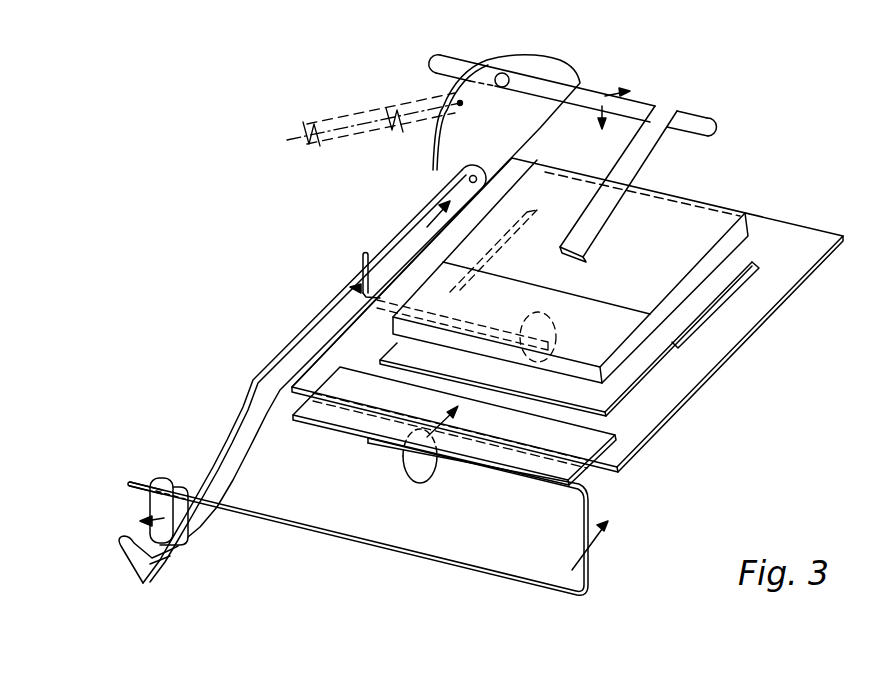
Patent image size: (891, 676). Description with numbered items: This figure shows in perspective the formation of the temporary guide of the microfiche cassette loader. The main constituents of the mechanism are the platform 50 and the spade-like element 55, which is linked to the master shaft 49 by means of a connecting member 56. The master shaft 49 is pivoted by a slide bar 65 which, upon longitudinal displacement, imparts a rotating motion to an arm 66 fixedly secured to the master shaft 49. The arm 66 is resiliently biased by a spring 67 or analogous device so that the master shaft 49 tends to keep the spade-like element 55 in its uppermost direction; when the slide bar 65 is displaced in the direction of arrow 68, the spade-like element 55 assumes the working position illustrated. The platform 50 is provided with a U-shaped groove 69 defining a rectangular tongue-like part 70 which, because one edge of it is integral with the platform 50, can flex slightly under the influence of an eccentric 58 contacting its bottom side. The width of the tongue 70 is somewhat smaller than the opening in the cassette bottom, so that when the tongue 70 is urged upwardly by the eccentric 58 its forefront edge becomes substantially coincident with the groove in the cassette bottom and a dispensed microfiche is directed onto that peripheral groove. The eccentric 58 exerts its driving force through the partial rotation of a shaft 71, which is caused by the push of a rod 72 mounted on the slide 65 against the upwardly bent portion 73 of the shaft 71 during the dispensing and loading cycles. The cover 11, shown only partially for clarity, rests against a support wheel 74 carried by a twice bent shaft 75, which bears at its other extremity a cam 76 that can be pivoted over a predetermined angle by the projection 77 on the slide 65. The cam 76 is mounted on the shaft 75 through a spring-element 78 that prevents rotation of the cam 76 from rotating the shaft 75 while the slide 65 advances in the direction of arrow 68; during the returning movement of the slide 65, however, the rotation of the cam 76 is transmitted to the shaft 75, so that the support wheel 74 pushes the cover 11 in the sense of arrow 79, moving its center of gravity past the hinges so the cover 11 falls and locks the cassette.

The cover 11 is at (565, 463).
The master shaft 49 is at (655, 112).
The platform 50 is at (722, 343).
The spade-like element 55 is at (728, 217).
The connecting member 56 is at (688, 157).
The eccentric 58 is at (603, 392).
The slide bar 65 is at (287, 353).
The arm 66 is at (578, 75).
The spring 67 is at (335, 142).
The arrow 68 is at (427, 210).
The U-shaped groove 69 is at (743, 283).
The rectangular tongue-like part 70 is at (603, 420).
The shaft 71 is at (465, 320).
The rod 72 is at (350, 289).
The upwardly bent portion 73 is at (360, 262).
The support wheel 74 is at (420, 480).
The twice bent shaft 75 is at (360, 545).
The cam 76 is at (143, 508).
The projection 77 is at (124, 553).
The spring-element 78 is at (132, 482).
The arrow 79 is at (458, 422).